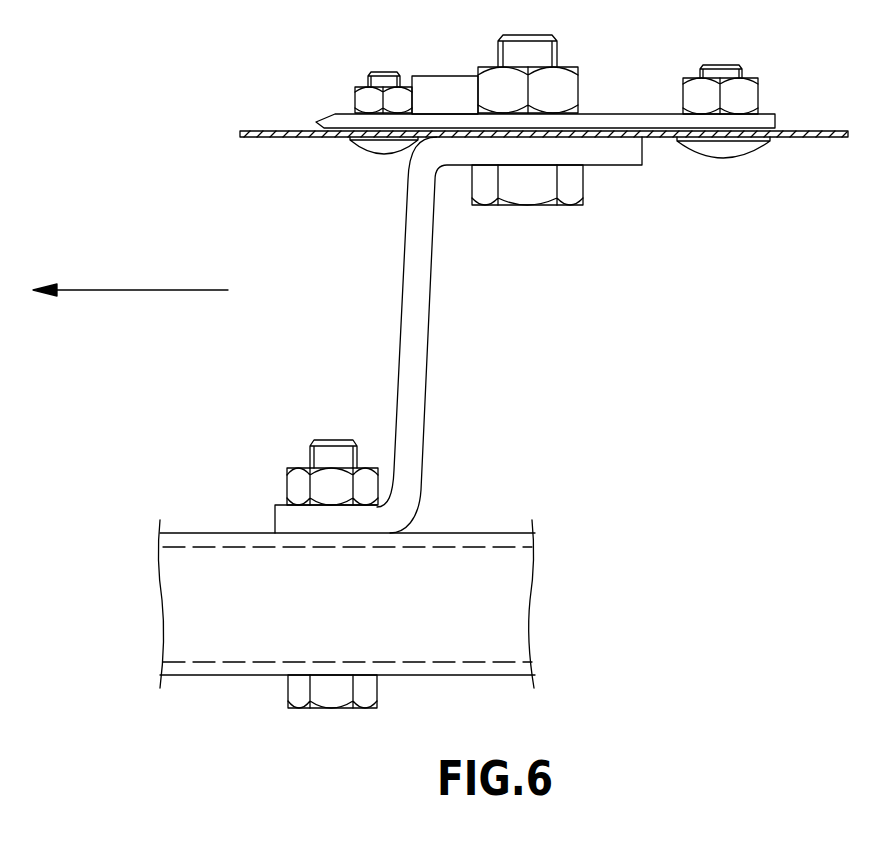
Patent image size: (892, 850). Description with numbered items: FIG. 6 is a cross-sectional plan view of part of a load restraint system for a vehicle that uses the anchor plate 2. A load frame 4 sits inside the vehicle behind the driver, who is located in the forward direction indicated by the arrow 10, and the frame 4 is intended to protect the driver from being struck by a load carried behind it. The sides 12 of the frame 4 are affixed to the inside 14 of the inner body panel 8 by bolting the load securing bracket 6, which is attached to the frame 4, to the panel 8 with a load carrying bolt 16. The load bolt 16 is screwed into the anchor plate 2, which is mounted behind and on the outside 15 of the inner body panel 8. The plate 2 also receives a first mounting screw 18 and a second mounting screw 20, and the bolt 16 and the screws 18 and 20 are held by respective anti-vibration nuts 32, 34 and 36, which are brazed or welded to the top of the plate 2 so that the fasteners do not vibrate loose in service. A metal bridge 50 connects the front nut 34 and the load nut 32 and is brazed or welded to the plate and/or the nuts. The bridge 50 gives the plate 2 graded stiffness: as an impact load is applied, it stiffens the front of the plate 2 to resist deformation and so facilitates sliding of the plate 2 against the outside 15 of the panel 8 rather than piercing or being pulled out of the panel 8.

The anchor plate 2 is at (638, 97).
The load frame 4 is at (457, 695).
The load securing bracket 6 is at (425, 392).
The inner body panel 8 is at (812, 150).
The arrow 10 is at (143, 291).
The sides of the frame 12 is at (430, 535).
The inside of the inner body panel 14 is at (270, 138).
The outside of the panel 15 is at (822, 131).
The load carrying bolt 16 is at (583, 185).
The first mounting screw 18 is at (392, 155).
The second mounting screw 20 is at (745, 160).
The load nut 32 is at (562, 80).
The front nut 34 is at (363, 93).
The nut 36 is at (750, 100).
The metal bridge 50 is at (437, 76).